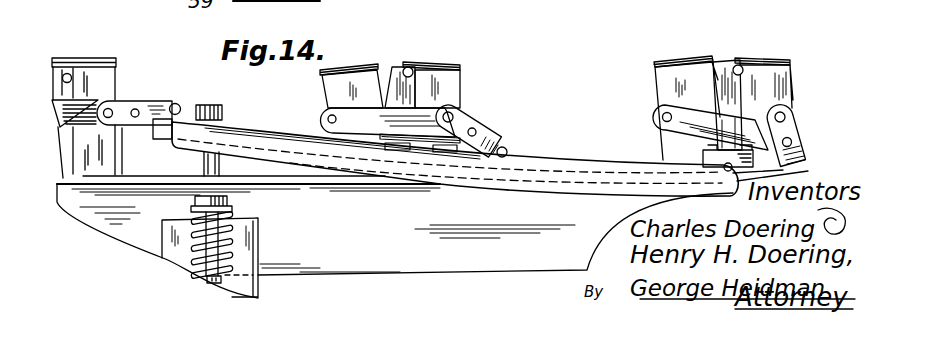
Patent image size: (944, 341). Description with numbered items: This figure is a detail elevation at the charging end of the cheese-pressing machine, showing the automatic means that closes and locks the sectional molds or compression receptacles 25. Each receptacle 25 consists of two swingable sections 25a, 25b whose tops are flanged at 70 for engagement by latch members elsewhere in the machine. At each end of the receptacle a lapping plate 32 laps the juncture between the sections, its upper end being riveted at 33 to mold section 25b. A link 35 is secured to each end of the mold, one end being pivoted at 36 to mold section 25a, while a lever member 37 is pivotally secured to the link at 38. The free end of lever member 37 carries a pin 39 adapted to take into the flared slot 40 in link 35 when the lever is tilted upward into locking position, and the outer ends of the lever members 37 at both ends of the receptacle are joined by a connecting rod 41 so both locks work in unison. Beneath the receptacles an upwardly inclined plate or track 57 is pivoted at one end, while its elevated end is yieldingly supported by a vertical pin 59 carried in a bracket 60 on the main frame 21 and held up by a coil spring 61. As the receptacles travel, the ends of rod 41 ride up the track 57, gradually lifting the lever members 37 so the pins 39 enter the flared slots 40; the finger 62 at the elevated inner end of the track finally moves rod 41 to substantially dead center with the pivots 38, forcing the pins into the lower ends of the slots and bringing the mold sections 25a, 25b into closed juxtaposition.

The main frame 21 is at (388, 273).
The cheese sectional mold or compression receptacle 25 is at (474, 77).
The mold section 25a is at (657, 85).
The mold section 25b is at (461, 88).
The lapping plate 32 is at (395, 65).
The rivet 33 is at (407, 66).
The link 35 is at (90, 101).
The pivot 36 is at (327, 117).
The lever member 37 is at (842, 128).
The pivot 38 is at (112, 110).
The pin 39 is at (153, 83).
The flared slot 40 is at (710, 127).
The connecting bar or rod 41 is at (177, 103).
The inclined plate or track 57 is at (241, 115).
The pin 59 is at (200, 162).
The bracket 60 is at (188, 265).
The coil spring 61 is at (188, 252).
The finger or projection 62 is at (163, 138).
The flange 70 is at (362, 69).